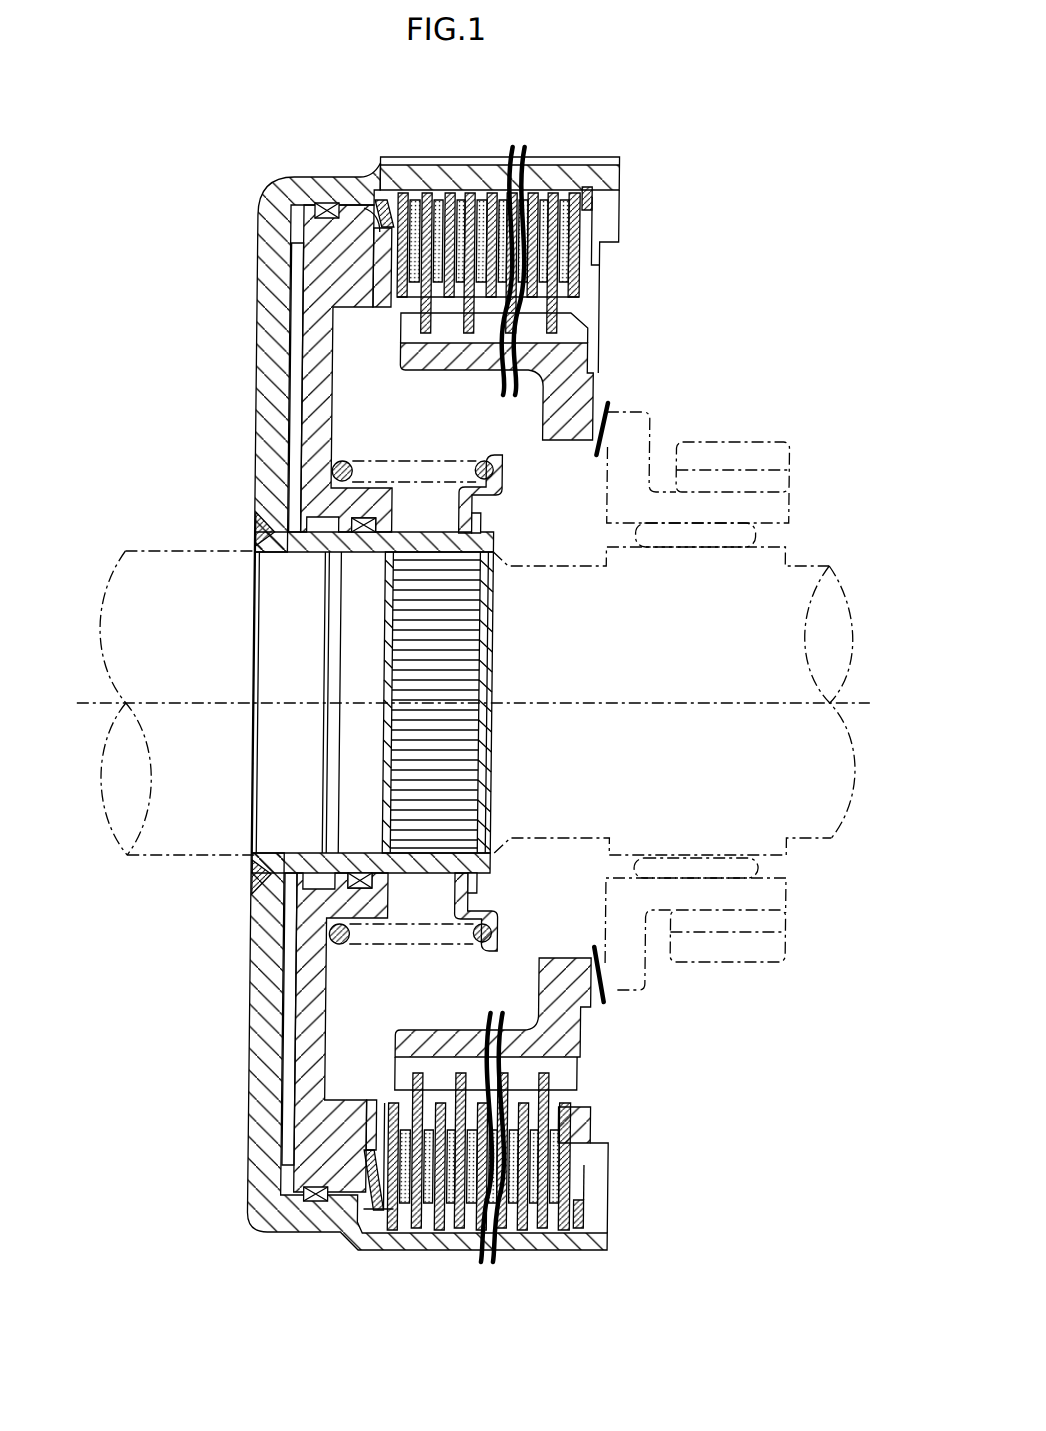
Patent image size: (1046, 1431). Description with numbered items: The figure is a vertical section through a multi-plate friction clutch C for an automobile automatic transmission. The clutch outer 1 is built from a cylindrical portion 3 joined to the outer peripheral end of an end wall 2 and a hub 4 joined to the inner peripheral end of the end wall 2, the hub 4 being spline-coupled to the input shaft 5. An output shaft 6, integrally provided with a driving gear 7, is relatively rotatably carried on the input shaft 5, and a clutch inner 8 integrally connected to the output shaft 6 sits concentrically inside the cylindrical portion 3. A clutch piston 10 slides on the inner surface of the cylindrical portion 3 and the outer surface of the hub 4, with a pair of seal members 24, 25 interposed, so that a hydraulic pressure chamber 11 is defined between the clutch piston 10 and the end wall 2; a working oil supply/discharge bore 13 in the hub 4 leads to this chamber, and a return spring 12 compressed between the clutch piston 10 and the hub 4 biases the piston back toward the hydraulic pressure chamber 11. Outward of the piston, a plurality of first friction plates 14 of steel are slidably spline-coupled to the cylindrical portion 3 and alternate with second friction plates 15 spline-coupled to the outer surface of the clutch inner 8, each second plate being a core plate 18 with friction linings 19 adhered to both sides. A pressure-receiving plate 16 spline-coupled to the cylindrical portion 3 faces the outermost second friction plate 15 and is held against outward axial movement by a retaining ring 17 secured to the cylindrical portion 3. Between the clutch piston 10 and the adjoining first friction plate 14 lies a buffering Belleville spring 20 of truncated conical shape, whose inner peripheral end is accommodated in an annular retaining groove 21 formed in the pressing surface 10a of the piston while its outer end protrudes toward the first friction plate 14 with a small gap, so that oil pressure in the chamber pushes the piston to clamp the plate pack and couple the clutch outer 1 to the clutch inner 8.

The multi-plate friction clutch C is at (638, 190).
The clutch outer 1 is at (258, 186).
The end wall 2 is at (262, 322).
The cylindrical portion 3 is at (464, 178).
The hub 4 is at (296, 540).
The input shaft 5 is at (213, 550).
The output shaft 6 is at (770, 508).
The driving gear 7 is at (750, 447).
The clutch inner 8 is at (483, 368).
The clutch piston 10 is at (336, 425).
The pressing surface 10a is at (407, 307).
The hydraulic pressure chamber 11 is at (293, 412).
The return spring 12 is at (398, 946).
The working oil supply/discharge bore 13 is at (305, 857).
The first friction plates 14 is at (531, 1208).
The second friction plates 15 is at (512, 1164).
The pressure-receiving plate 16 is at (587, 1123).
The retaining ring 17 is at (590, 1207).
The core plate 18 is at (551, 1205).
The friction linings 19 is at (632, 1302).
The buffering Belleville spring 20 is at (389, 215).
The annular retaining groove 21 is at (371, 192).
The seal member 24 is at (361, 532).
The seal member 25 is at (324, 205).